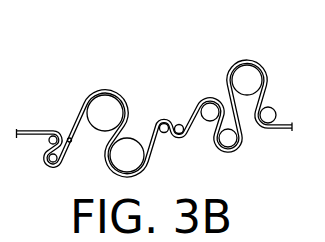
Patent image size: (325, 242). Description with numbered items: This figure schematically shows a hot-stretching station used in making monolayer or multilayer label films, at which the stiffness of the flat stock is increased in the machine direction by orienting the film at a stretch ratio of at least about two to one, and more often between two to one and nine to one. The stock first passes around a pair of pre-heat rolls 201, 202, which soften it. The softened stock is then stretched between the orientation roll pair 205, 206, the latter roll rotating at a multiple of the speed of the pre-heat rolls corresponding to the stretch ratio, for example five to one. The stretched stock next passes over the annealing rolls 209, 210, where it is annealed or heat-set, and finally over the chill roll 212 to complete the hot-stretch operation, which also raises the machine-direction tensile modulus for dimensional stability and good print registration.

The pre-heat roll 201 is at (99, 103).
The pre-heat roll 202 is at (126, 162).
The orientation roll 205 is at (163, 123).
The orientation roll 206 is at (179, 124).
The annealing roll 209 is at (209, 103).
The annealing roll 210 is at (234, 141).
The chill roll 212 is at (251, 77).